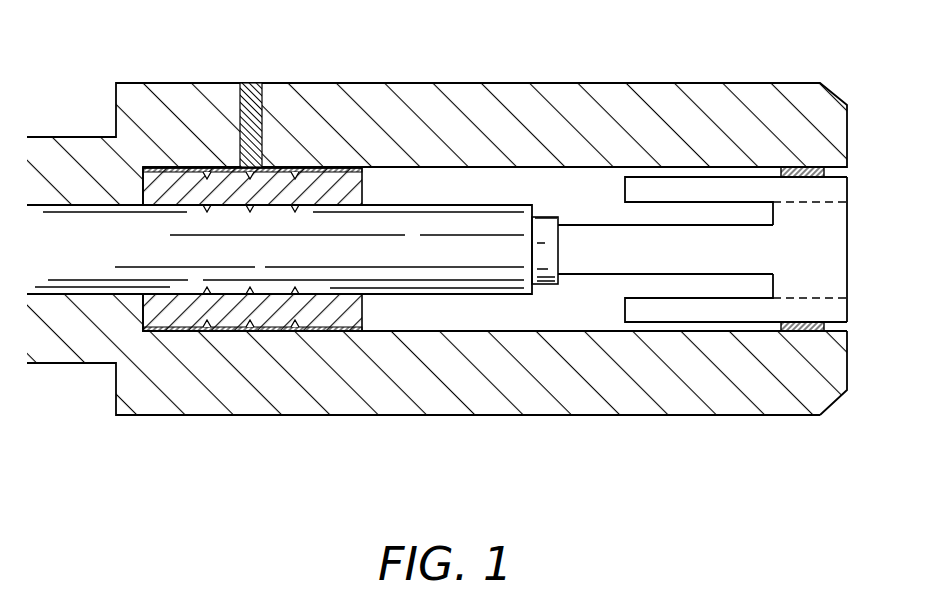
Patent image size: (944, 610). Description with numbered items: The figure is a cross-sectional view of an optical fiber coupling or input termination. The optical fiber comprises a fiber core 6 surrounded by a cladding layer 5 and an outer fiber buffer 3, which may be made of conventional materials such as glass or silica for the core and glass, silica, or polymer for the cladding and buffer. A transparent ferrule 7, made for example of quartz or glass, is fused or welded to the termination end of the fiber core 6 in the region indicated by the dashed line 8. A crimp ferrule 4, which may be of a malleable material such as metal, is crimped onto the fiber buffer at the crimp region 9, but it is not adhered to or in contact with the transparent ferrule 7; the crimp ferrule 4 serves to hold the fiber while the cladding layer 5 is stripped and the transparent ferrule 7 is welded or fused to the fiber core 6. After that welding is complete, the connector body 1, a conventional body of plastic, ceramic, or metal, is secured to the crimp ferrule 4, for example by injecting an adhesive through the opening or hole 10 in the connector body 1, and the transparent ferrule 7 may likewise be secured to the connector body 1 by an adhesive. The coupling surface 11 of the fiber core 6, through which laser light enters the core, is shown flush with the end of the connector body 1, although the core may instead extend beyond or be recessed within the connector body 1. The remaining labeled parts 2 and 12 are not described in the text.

The connector body 1 is at (452, 255).
The connector body 2 is at (720, 257).
The fiber buffer 3 is at (425, 262).
The crimp ferrule 4 is at (252, 321).
The cladding layer 5 is at (547, 263).
The fiber core 6 is at (708, 255).
The transparent ferrule 7 is at (707, 188).
The dashed line 8 is at (807, 198).
The crimp region 9 is at (205, 293).
The opening or hole 10 is at (250, 92).
The coupling surface 11 is at (848, 253).
The housing end 12 is at (848, 358).